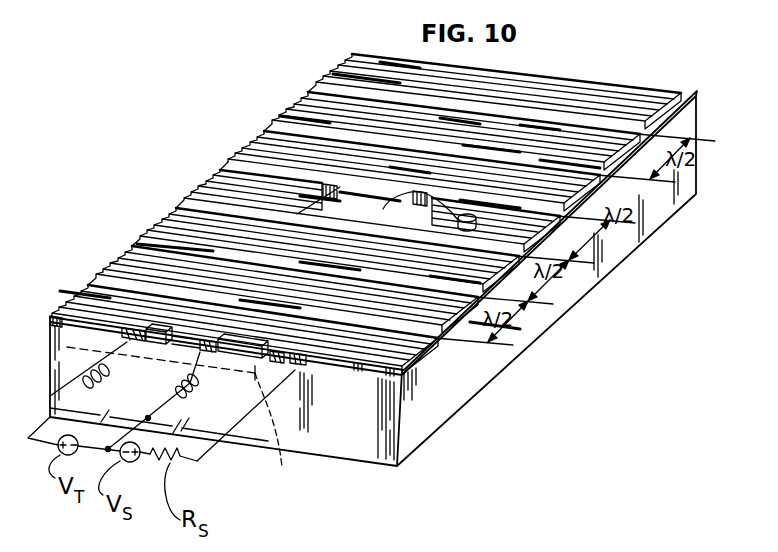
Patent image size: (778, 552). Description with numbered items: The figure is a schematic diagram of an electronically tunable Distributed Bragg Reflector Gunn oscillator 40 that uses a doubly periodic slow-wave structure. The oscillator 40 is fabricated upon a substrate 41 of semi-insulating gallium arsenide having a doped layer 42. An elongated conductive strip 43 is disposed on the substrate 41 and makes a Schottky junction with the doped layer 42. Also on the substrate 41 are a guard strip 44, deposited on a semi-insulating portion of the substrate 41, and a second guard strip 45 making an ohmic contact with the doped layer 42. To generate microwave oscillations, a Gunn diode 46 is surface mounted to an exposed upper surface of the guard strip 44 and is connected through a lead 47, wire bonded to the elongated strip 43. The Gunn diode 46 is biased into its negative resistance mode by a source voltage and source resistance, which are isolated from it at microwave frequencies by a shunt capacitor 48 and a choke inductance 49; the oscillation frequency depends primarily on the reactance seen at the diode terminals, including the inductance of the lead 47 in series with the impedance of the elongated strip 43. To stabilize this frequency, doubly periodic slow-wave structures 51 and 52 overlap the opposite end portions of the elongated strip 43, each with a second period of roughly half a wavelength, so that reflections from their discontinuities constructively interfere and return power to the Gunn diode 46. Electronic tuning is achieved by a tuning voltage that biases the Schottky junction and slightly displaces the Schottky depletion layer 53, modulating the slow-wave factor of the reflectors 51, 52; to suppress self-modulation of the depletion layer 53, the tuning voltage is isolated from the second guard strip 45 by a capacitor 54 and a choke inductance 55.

The Distributed Bragg Reflector Gunn oscillator 40 is at (628, 74).
The substrate 41 is at (622, 253).
The doped layer 42 is at (50, 383).
The elongated conductive strip 43 is at (182, 360).
The guard strip 44 is at (375, 372).
The second guard strip 45 is at (50, 321).
The Gunn diode 46 is at (476, 220).
The lead 47 is at (383, 209).
The shunt capacitor 48 is at (176, 422).
The choke inductance 49 is at (198, 385).
The doubly periodic slow-wave structure 51 is at (133, 217).
The doubly periodic slow-wave structure 52 is at (287, 87).
The Schottky depletion layer 53 is at (282, 466).
The capacitor 54 is at (113, 407).
The choke inductance 55 is at (50, 410).